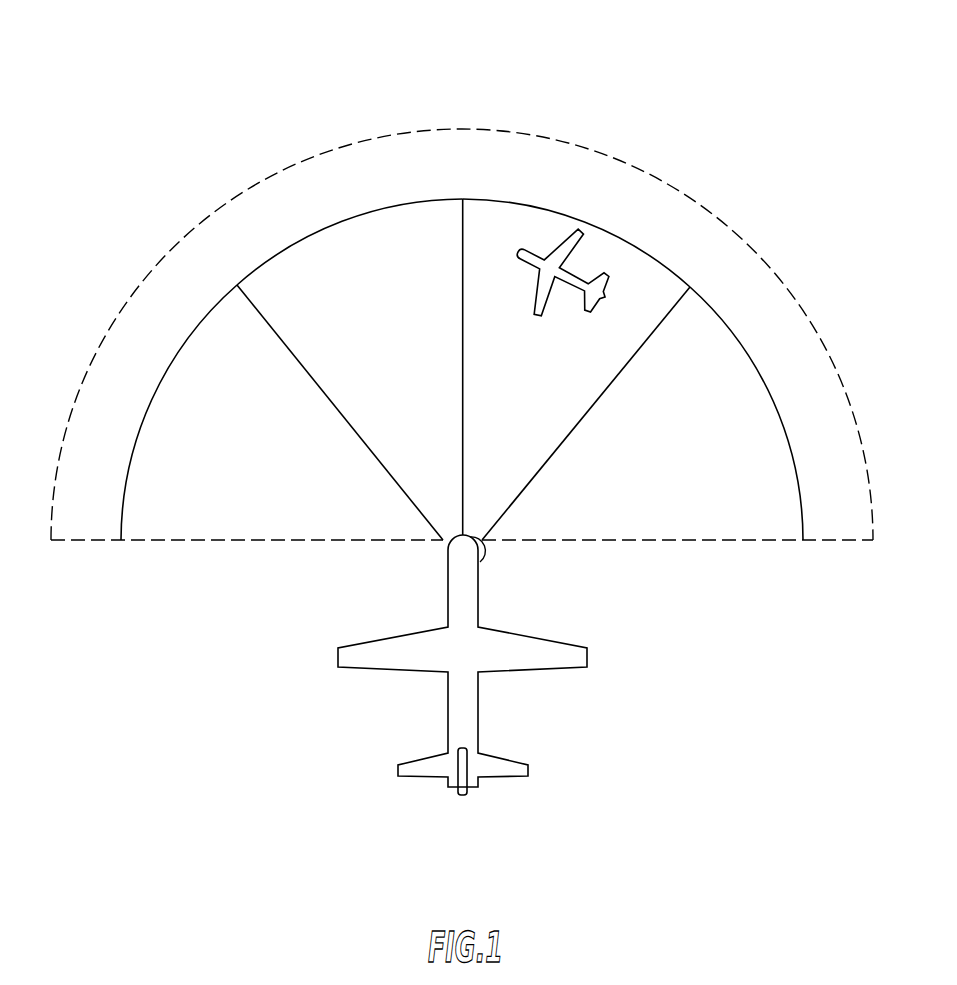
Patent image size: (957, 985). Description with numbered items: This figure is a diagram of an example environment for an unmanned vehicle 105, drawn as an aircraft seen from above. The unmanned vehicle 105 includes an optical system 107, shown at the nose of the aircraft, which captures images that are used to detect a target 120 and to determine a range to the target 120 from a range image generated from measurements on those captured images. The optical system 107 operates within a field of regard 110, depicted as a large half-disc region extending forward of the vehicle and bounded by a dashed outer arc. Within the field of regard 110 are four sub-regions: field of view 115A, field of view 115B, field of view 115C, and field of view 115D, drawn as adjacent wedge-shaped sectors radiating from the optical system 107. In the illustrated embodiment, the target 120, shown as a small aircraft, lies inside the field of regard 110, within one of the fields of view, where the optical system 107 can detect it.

The unmanned vehicle 105 is at (637, 683).
The optical system 107 is at (481, 553).
The field of regard 110 is at (257, 190).
The field of view 115A is at (163, 368).
The field of view 115B is at (393, 207).
The field of view 115C is at (553, 209).
The field of view 115D is at (757, 370).
The target 120 is at (598, 279).